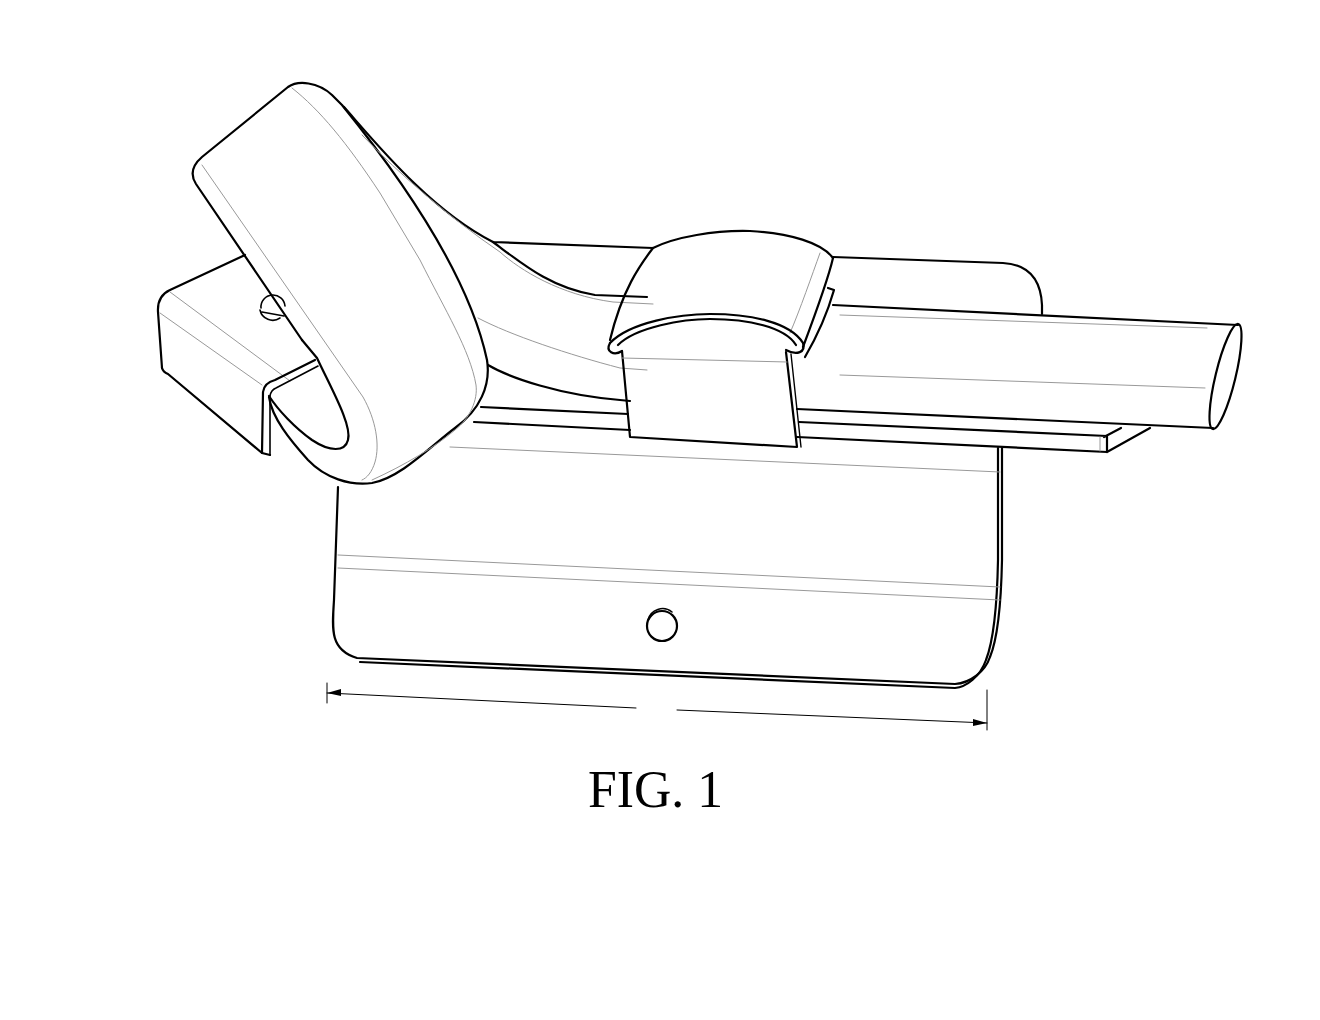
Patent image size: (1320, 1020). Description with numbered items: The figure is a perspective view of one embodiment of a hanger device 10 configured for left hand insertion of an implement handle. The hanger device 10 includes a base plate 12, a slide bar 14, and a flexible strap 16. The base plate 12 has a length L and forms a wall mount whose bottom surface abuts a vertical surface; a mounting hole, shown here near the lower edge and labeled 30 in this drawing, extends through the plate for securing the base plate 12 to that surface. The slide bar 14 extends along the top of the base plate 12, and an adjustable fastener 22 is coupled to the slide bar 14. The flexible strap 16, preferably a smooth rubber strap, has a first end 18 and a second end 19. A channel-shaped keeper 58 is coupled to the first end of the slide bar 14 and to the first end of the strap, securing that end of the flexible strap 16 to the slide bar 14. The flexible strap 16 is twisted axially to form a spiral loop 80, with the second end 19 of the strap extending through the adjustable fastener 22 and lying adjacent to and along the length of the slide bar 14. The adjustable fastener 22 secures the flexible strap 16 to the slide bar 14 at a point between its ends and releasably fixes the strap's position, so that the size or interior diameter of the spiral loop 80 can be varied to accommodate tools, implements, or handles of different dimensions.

The hanger device 10 is at (947, 180).
The base plate 12 is at (958, 522).
The slide bar 14 is at (1063, 443).
The flexible strap 16 is at (1100, 330).
The first end 18 is at (315, 398).
The second end 19 is at (1203, 335).
The adjustable fastener 22 is at (752, 210).
The mounting hole 30 is at (955, 639).
The keeper 58 is at (207, 290).
The spiral loop 80 is at (378, 92).